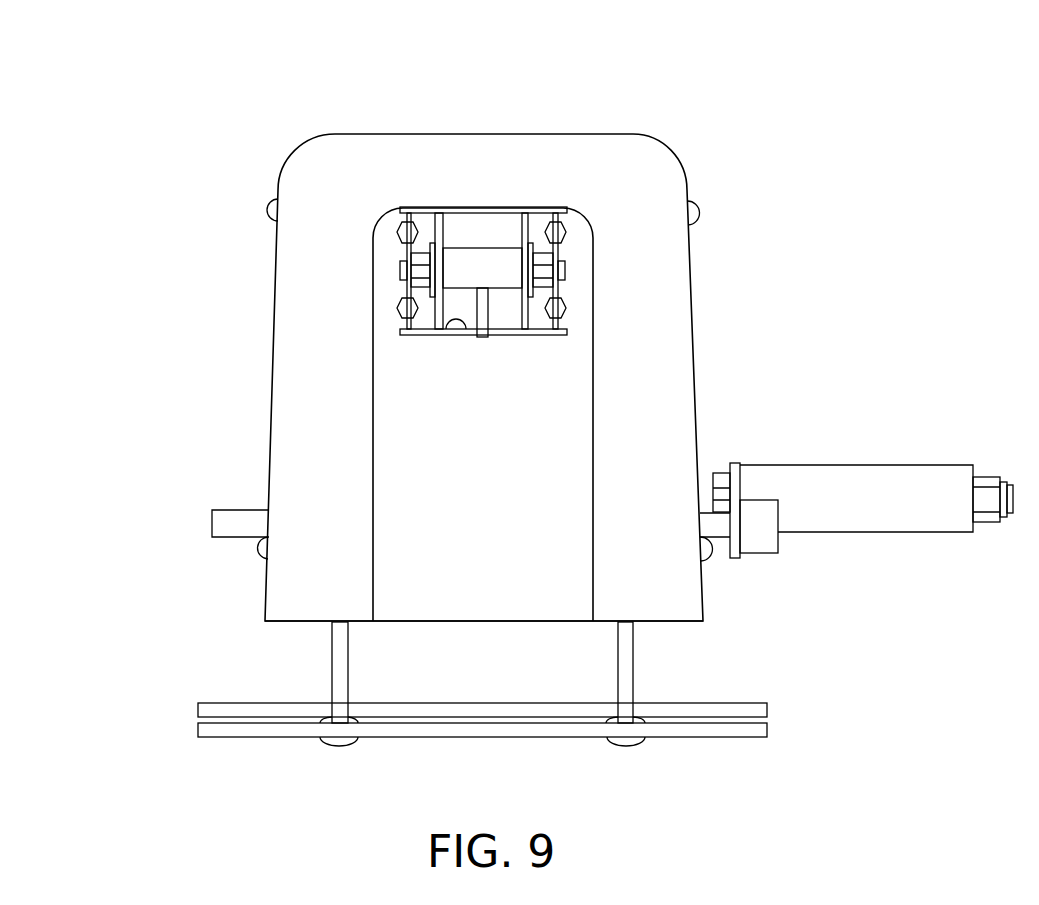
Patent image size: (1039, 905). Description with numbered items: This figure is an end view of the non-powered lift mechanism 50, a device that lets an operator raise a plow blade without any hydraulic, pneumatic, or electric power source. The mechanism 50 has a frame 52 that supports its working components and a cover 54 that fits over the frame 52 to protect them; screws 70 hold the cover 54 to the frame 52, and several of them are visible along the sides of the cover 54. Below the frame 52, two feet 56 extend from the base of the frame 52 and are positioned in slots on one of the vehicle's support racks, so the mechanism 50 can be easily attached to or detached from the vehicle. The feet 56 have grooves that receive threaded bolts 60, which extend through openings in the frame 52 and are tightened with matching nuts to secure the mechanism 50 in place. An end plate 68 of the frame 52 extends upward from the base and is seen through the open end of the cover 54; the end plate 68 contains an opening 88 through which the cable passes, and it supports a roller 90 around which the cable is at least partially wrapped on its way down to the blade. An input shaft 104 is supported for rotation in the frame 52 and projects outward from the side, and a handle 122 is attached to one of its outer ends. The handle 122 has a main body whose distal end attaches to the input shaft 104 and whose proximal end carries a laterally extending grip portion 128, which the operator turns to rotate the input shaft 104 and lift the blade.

The non-powered lift mechanism 50 is at (257, 112).
The frame 52 is at (470, 613).
The cover 54 is at (420, 143).
The foot 56 is at (218, 728).
The threaded bolt 60 is at (337, 662).
The end plate 68 is at (488, 499).
The screw 70 is at (268, 210).
The opening 88 is at (447, 329).
The roller 90 is at (493, 275).
The input shaft 104 is at (223, 518).
The handle 122 is at (815, 450).
The grip portion 128 is at (953, 466).